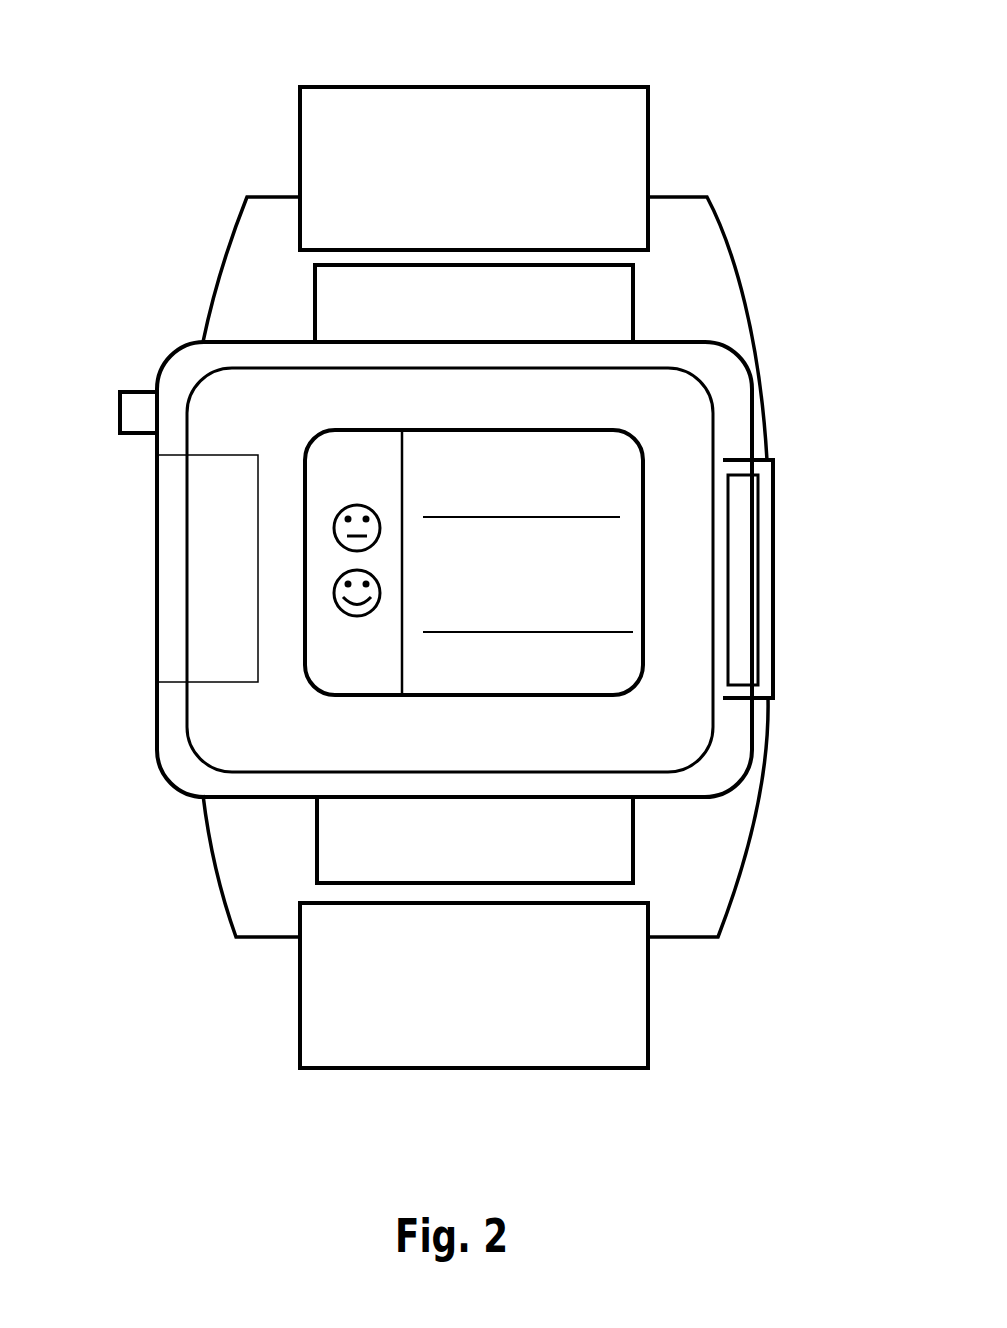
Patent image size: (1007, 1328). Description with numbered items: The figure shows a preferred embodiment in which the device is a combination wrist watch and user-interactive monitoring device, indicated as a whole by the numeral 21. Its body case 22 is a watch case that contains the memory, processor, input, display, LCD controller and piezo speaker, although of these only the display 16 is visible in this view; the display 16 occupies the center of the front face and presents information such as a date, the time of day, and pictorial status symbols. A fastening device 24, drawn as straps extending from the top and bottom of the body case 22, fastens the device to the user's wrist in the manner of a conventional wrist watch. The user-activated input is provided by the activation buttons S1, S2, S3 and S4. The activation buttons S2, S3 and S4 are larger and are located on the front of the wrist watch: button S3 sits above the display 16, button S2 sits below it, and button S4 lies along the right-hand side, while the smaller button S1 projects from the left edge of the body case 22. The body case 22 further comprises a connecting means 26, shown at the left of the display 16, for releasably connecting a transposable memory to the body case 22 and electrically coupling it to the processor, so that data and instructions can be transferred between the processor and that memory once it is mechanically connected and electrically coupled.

The fastening device 24 is at (537, 160).
The wristwatch 21 is at (752, 190).
The body case 22 is at (702, 290).
The display 16 is at (665, 430).
The connecting means 26 is at (177, 628).
The activation button S1 is at (132, 387).
The activation button S2 is at (417, 845).
The activation button S3 is at (402, 298).
The activation button S4 is at (742, 573).